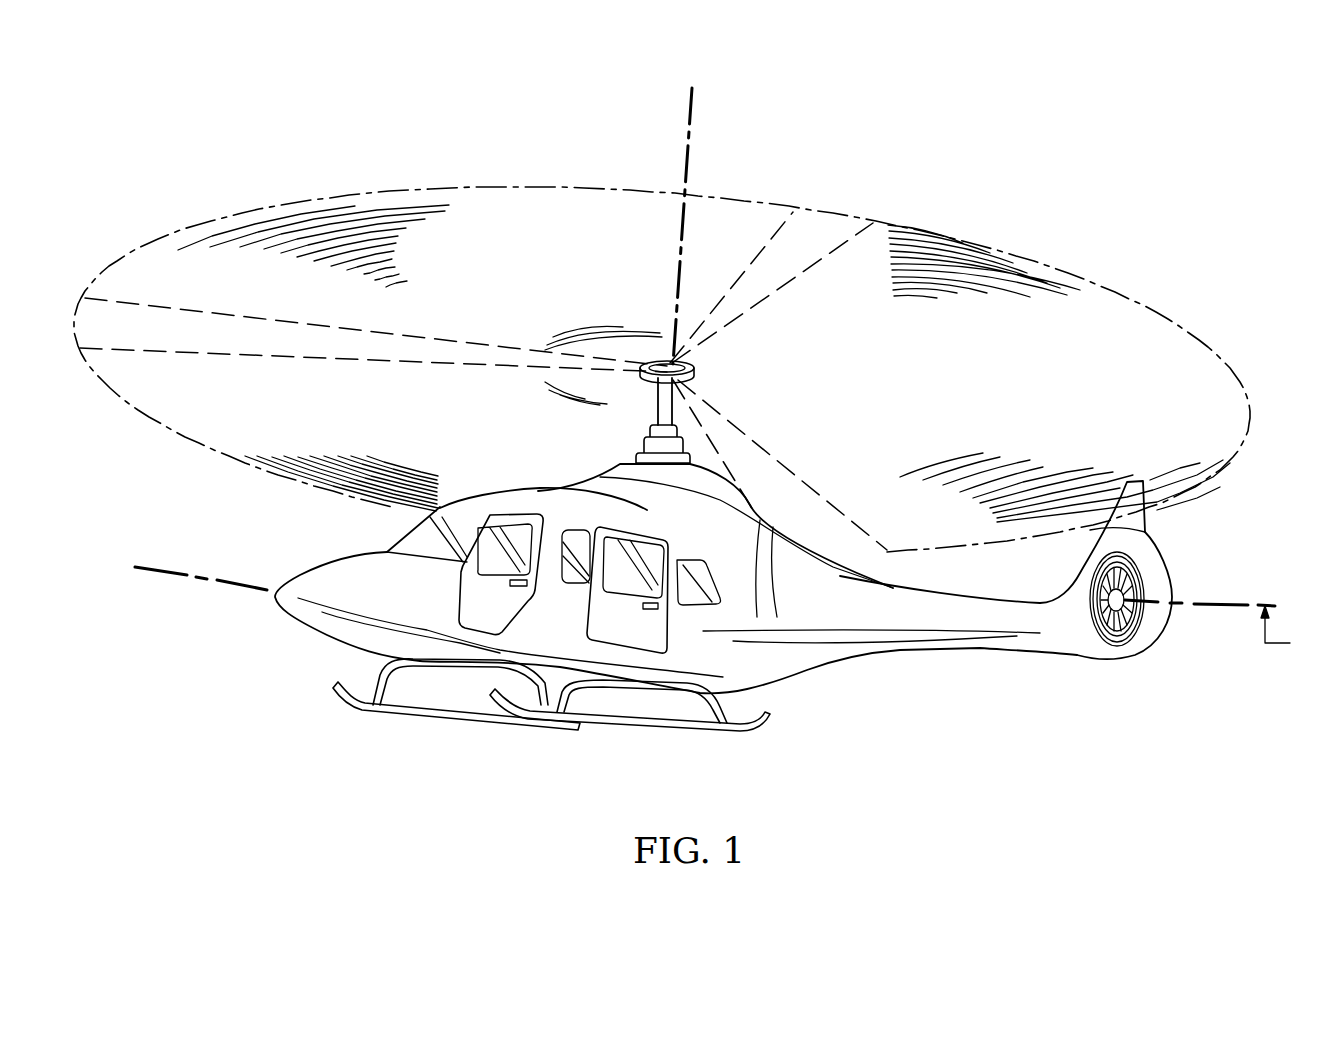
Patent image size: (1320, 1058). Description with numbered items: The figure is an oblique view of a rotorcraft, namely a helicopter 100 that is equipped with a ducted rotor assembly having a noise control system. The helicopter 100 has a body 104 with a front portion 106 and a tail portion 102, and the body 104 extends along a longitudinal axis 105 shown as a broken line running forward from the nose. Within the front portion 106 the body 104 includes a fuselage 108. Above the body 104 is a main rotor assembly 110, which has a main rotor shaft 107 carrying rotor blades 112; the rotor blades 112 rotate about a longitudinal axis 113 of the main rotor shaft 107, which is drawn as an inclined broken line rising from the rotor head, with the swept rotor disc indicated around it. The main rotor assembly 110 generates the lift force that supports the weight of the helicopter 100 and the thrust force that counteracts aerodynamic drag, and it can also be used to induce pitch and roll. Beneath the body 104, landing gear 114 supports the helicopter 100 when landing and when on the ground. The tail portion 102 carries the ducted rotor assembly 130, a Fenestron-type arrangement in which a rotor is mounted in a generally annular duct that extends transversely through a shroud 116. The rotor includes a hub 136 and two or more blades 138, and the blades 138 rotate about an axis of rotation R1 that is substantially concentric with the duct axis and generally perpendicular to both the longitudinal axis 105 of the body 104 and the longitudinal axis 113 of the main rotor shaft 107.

The helicopter 100 is at (331, 144).
The tail portion 102 is at (1001, 652).
The body 104 is at (818, 685).
The longitudinal axis 105 is at (162, 580).
The front portion 106 is at (316, 630).
The main rotor shaft 107 is at (655, 413).
The fuselage 108 is at (497, 492).
The main rotor assembly 110 is at (722, 389).
The rotor blades 112 is at (777, 300).
The longitudinal axis of the main rotor shaft 113 is at (690, 111).
The landing gear 114 is at (673, 735).
The shroud 116 is at (1158, 545).
The ducted rotor assembly 130 is at (1130, 698).
The hub 136 is at (1133, 615).
The blades 138 is at (1135, 596).
The axis of rotation R1 is at (1222, 631).